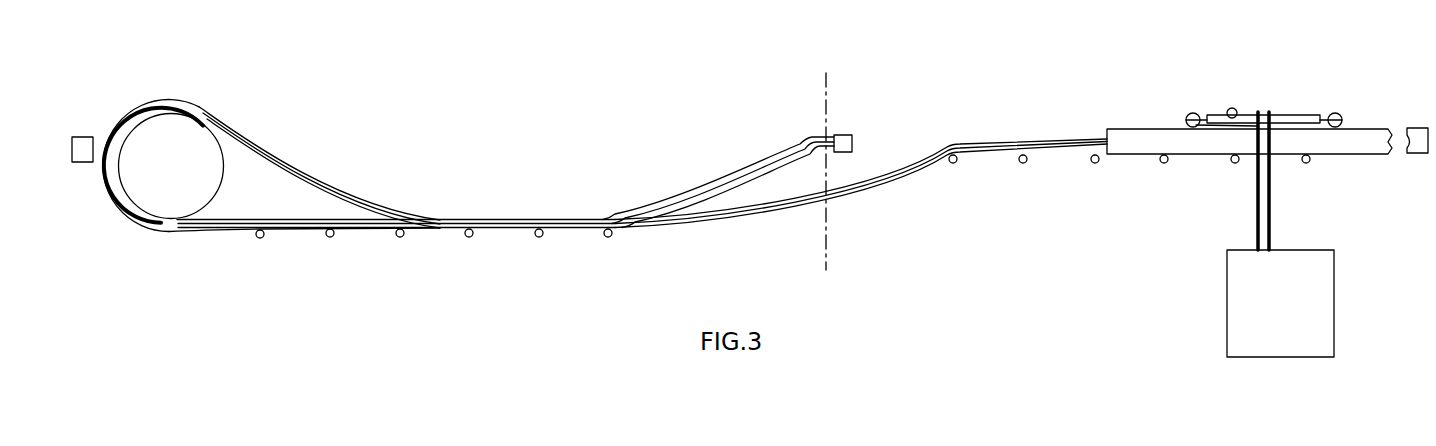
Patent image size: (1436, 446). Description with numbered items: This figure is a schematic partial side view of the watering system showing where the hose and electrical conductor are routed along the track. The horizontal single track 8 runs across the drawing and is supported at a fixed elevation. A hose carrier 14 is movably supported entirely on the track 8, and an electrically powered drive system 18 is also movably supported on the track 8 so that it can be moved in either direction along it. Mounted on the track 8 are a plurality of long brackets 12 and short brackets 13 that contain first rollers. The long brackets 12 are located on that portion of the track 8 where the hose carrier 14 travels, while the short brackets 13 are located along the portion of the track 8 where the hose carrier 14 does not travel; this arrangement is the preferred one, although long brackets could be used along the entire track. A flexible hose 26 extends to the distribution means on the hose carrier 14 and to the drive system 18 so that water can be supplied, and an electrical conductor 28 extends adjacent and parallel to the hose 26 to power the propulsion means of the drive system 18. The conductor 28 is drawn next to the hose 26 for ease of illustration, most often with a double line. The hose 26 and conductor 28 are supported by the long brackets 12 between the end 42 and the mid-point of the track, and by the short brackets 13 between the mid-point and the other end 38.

The track 8 is at (102, 133).
The long brackets 12 is at (260, 238).
The short brackets 13 is at (953, 163).
The hose carrier 14 is at (157, 197).
The drive system 18 is at (1252, 120).
The flexible hose 26 is at (227, 132).
The electrical conductor 28 is at (287, 187).
The end 38 is at (1412, 128).
The end 42 is at (72, 145).